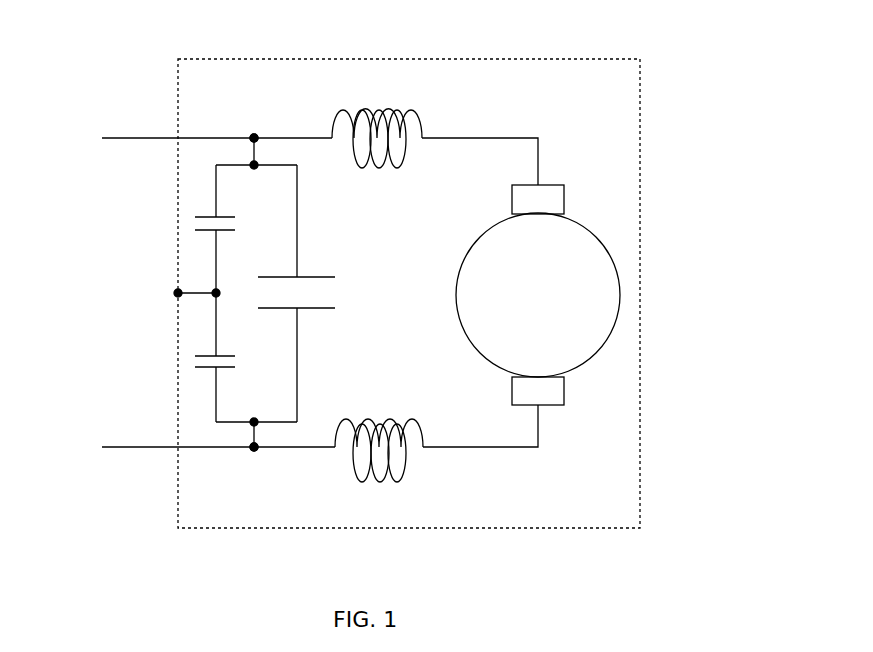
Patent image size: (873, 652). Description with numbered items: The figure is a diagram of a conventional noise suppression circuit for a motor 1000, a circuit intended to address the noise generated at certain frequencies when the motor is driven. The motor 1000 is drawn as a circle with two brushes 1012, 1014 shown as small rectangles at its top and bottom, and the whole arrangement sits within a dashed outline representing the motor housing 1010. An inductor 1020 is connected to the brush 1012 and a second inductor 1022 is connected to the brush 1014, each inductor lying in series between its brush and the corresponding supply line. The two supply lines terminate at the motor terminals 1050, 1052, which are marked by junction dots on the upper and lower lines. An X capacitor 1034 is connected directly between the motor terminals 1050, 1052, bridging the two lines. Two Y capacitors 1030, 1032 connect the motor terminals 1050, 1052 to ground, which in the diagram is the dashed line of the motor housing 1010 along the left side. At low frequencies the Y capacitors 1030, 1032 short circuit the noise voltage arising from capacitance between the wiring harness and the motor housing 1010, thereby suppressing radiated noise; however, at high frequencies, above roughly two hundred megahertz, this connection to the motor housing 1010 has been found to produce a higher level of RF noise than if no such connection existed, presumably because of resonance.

The motor 1000 is at (588, 297).
The motor housing 1010 is at (640, 118).
The brush 1012 is at (547, 200).
The brush 1014 is at (547, 388).
The inductor 1020 is at (379, 130).
The inductor 1022 is at (405, 462).
The Y capacitor 1030 is at (205, 221).
The Y capacitor 1032 is at (207, 360).
The X capacitor 1034 is at (312, 277).
The motor terminal 1050 is at (290, 138).
The motor terminal 1052 is at (284, 452).